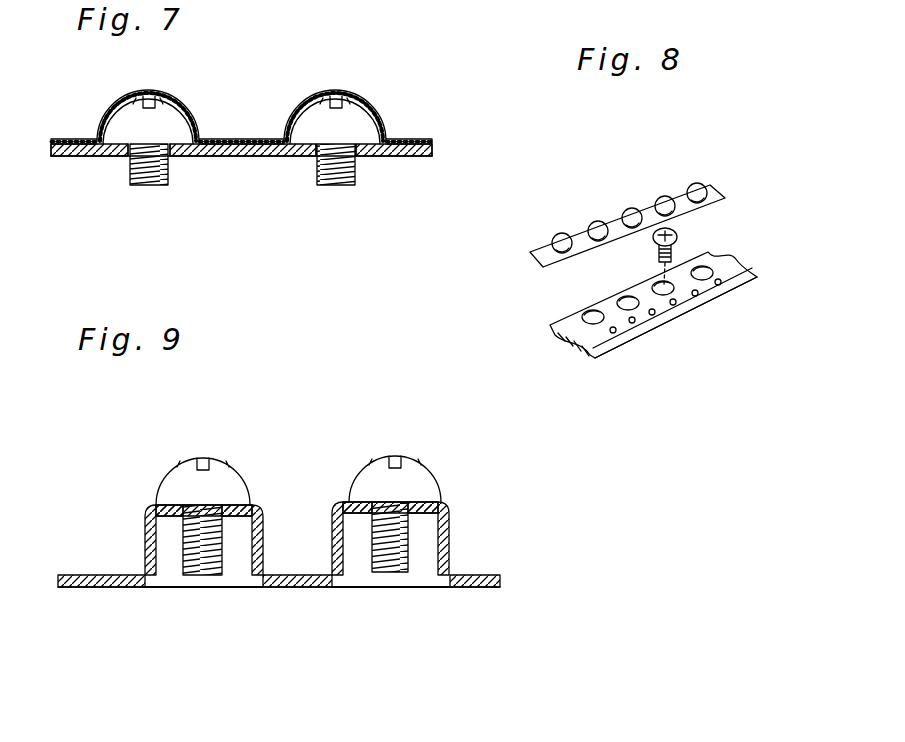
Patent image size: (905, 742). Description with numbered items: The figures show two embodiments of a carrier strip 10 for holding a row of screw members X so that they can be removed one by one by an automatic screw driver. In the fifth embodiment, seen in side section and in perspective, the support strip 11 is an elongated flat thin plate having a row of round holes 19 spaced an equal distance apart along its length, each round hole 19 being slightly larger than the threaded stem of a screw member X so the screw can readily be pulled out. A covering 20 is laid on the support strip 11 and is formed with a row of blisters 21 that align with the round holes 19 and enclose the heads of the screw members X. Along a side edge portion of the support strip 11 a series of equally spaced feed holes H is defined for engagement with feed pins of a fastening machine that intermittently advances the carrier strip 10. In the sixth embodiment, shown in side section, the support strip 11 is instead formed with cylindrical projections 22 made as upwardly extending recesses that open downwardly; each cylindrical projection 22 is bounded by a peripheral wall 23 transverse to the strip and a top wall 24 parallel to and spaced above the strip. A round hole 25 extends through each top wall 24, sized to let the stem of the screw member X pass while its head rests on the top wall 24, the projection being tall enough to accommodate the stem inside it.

In FIG. 7, the carrier strip 10 is at (258, 155).
In FIG. 8, the carrier strip 10 is at (663, 332).
In FIG. 9, the carrier strip 10 is at (268, 588).
In FIG. 7, the support strip 11 is at (400, 156).
In FIG. 8, the support strip 11 is at (580, 345).
In FIG. 9, the support strip 11 is at (310, 587).
In FIG. 7, the round hole 19 is at (172, 168).
In FIG. 8, the round hole 19 is at (588, 317).
In FIG. 7, the covering 20 is at (412, 137).
In FIG. 8, the covering 20 is at (542, 250).
In FIG. 7, the blister 21 is at (193, 108).
In FIG. 8, the blister 21 is at (597, 226).
In FIG. 9, the cylindrical projection 22 is at (144, 553).
In FIG. 9, the peripheral wall 23 is at (145, 523).
In FIG. 9, the top wall 24 is at (357, 507).
In FIG. 9, the round hole 25 is at (222, 508).
In FIG. 7, the screw member X is at (122, 123).
In FIG. 8, the screw member X is at (677, 235).
In FIG. 9, the screw member X is at (178, 478).
In FIG. 8, the feed hole H is at (696, 295).